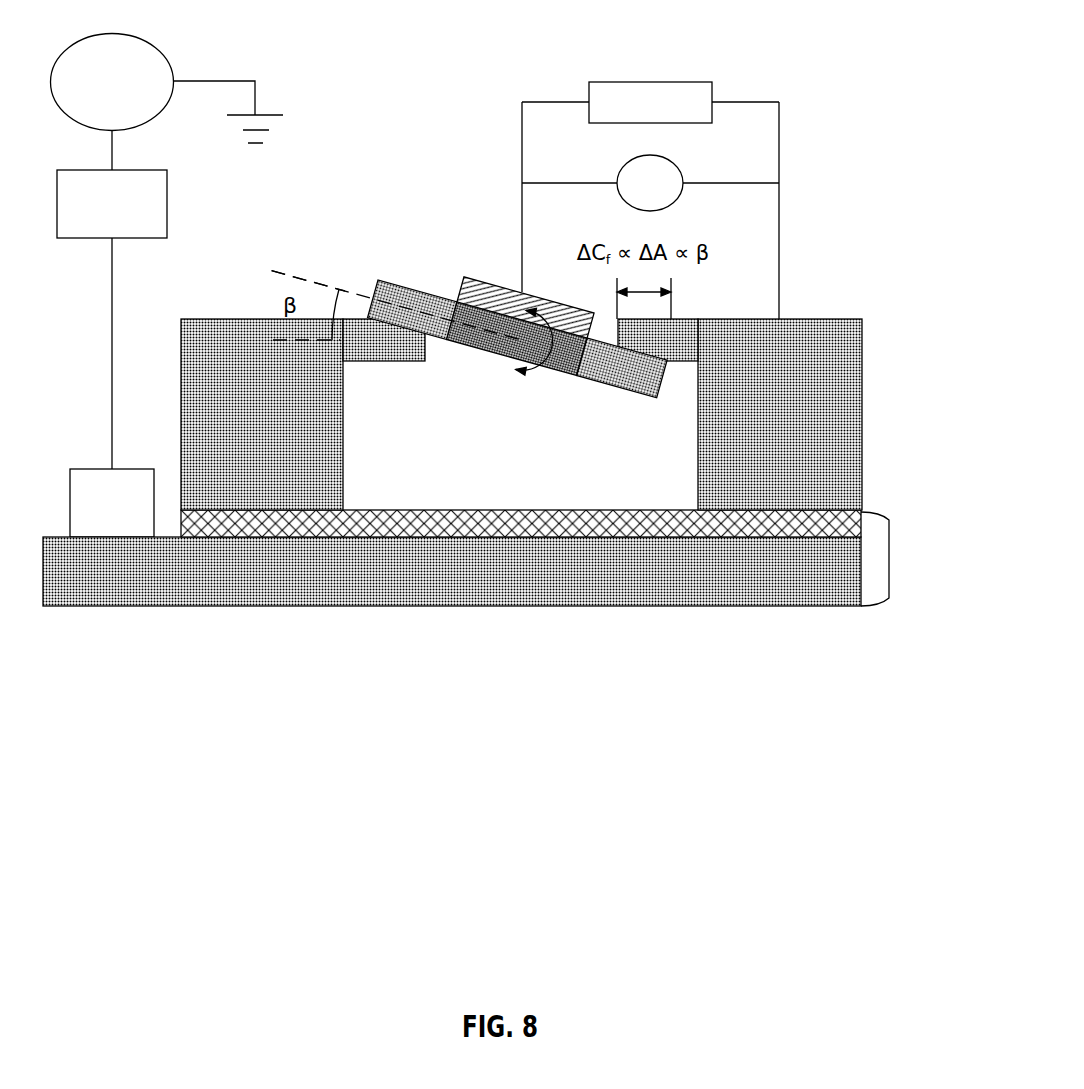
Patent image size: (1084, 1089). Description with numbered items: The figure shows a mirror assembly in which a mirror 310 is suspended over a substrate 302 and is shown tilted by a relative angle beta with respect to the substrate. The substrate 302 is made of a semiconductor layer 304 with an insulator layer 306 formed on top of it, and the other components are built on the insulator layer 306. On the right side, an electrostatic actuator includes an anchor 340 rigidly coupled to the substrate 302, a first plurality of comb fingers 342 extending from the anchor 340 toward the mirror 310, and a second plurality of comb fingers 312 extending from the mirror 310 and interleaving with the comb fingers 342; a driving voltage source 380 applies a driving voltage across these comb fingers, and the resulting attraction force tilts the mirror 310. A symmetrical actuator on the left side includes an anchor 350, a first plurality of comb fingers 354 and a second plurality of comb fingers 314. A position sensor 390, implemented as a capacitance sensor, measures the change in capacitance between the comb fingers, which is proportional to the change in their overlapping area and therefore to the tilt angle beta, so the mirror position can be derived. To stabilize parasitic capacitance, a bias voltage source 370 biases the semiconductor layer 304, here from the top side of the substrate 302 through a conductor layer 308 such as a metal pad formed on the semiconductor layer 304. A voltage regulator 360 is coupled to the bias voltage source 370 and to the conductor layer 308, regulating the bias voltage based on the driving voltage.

The substrate 302 is at (889, 558).
The semiconductor layer 304 is at (438, 589).
The insulator layer 306 is at (478, 522).
The conductor layer 308 is at (112, 503).
The mirror 310 is at (525, 307).
The second plurality of comb fingers 312 is at (622, 368).
The second plurality of comb fingers 314 is at (412, 309).
The anchor 340 is at (780, 414).
The first plurality of comb fingers 342 is at (685, 348).
The anchor 350 is at (262, 414).
The first plurality of comb fingers 354 is at (365, 345).
The voltage regulator 360 is at (112, 204).
The bias voltage source 370 is at (112, 82).
The driving voltage source 380 is at (650, 183).
The position sensor 390 is at (650, 102).